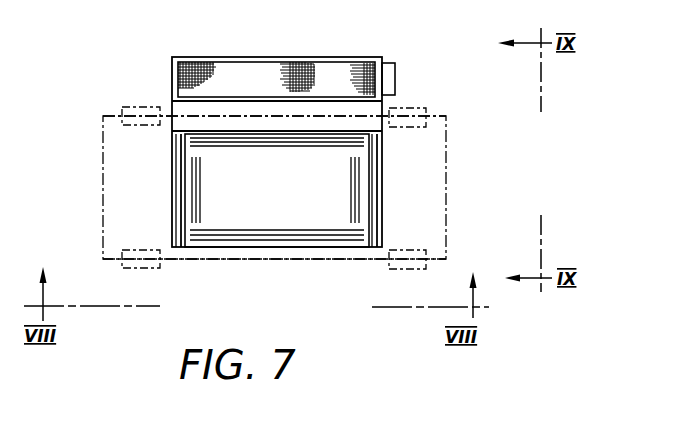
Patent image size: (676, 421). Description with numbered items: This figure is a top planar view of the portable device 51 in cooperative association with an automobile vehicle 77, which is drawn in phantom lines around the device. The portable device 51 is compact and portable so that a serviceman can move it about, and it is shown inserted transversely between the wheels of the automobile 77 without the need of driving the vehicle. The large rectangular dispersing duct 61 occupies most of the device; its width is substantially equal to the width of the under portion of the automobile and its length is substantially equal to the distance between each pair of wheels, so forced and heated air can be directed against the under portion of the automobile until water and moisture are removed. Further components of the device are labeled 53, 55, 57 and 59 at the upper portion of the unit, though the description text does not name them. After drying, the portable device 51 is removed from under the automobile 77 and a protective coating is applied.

The portable device 51 is at (330, 57).
The display window 53 is at (238, 77).
The indicator region 55 is at (292, 82).
The control element 57 is at (413, 66).
The control element 59 is at (389, 80).
The dispersing duct 61 is at (276, 192).
The automobile vehicle 77 is at (446, 173).